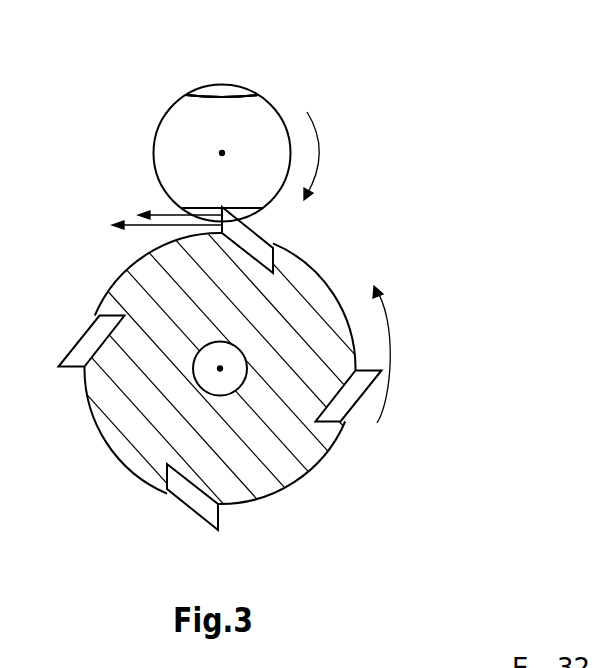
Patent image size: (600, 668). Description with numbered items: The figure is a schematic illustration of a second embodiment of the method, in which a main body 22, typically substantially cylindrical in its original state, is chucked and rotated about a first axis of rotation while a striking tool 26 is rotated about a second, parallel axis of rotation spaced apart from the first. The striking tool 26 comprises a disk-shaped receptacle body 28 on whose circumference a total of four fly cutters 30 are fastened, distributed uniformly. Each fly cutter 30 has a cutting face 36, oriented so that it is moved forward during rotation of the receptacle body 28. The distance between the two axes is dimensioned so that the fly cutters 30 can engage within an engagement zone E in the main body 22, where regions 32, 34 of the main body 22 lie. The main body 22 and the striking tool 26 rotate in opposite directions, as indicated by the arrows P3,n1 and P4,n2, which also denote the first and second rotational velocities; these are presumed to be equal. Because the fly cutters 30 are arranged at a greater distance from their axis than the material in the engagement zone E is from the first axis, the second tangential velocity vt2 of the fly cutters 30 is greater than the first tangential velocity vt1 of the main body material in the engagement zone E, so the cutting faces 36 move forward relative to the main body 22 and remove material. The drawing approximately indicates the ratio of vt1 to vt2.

The main body 22 is at (173, 124).
The flattened region of counter roller 32 is at (237, 88).
The flattened region of counter roller 34 is at (249, 50).
The engagement zone E is at (215, 90).
The first tangential velocity vt1 is at (168, 214).
The second tangential velocity vt2 is at (138, 226).
The rotational direction arrow and first rotational velocity P3,n1 is at (318, 160).
The rotational direction arrow and second rotational velocity P4,n2 is at (391, 369).
The striking tool 26 is at (350, 502).
The receptacle body 28 is at (137, 463).
The fly cutters 30 is at (270, 246).
The cutting faces 36 is at (222, 518).